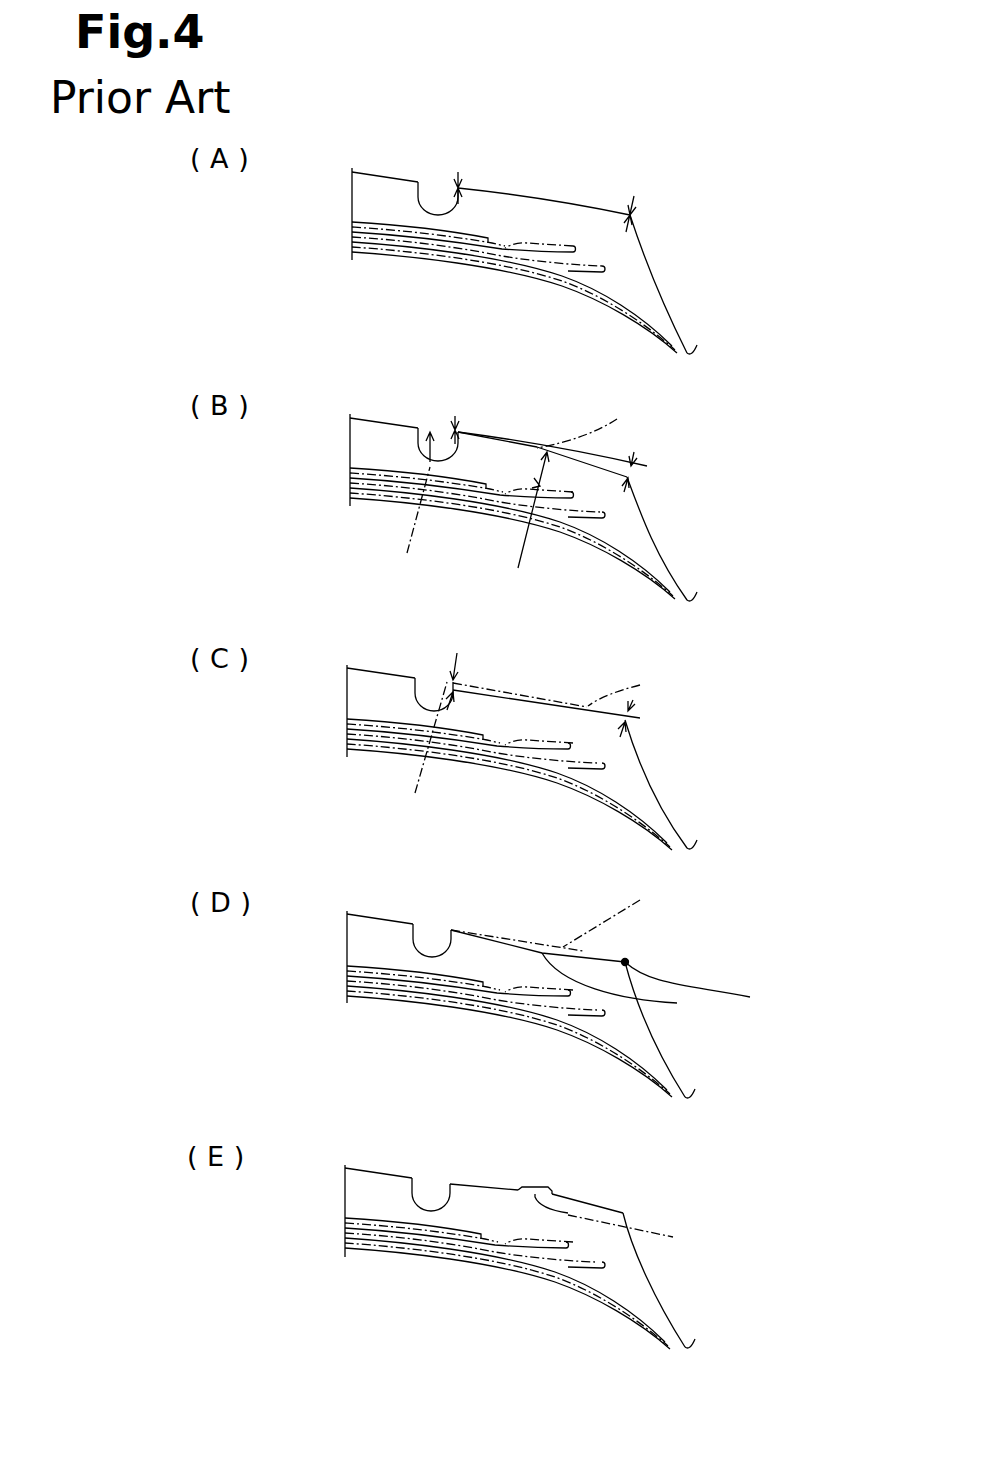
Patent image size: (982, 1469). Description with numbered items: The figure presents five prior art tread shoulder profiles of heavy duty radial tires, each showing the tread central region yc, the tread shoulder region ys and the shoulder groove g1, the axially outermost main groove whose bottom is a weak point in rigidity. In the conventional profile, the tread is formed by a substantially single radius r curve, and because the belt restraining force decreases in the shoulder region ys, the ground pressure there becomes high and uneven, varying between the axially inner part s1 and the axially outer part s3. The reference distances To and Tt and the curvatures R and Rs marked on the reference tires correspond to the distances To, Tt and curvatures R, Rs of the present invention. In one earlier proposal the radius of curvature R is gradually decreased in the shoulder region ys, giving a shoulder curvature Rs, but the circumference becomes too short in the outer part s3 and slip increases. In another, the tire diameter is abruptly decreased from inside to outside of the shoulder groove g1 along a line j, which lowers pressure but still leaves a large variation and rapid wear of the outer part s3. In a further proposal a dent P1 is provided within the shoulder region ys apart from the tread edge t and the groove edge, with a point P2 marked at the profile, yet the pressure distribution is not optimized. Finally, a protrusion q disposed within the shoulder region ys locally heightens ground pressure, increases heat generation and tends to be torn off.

The tread central region yc is at (373, 171).
The tread shoulder region ys is at (622, 123).
The shoulder groove g1 is at (436, 180).
The distance To is at (450, 421).
The distance Tt is at (651, 447).
The single radius r is at (382, 185).
The tread profile radius of curvature R is at (410, 531).
The shoulder curvature Rs is at (518, 553).
The axially inner part s1 is at (467, 423).
The axially outer part s3 is at (626, 450).
The tangent line j is at (617, 419).
The dent P1 is at (677, 1003).
The second point P2 is at (607, 955).
The tread edge t is at (693, 989).
The protrusion q is at (535, 1190).